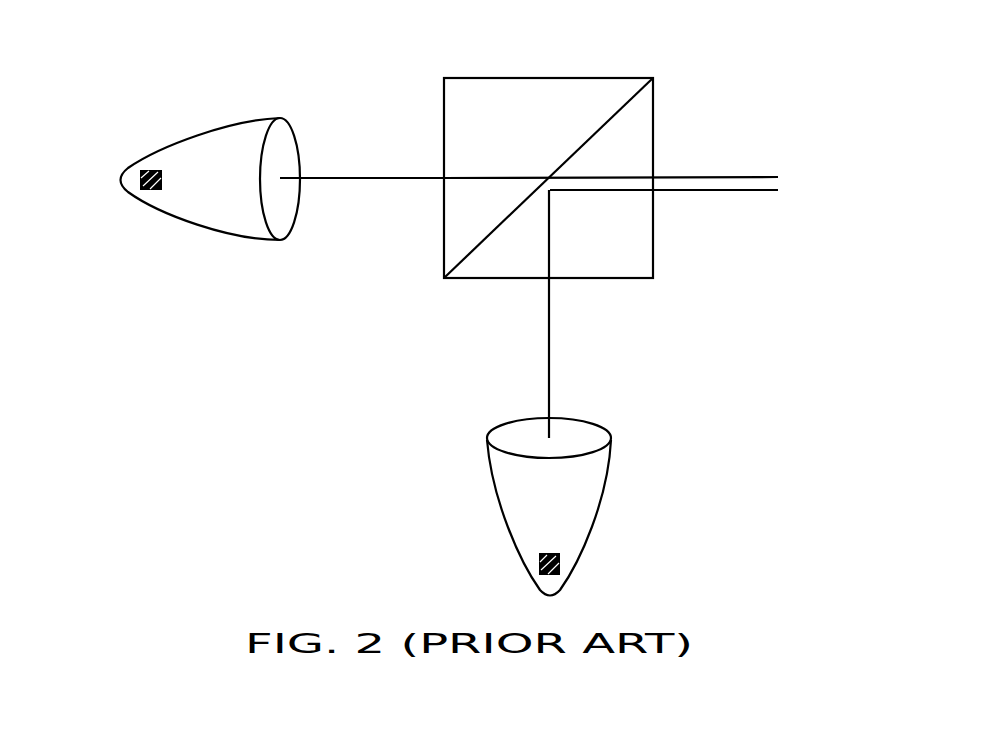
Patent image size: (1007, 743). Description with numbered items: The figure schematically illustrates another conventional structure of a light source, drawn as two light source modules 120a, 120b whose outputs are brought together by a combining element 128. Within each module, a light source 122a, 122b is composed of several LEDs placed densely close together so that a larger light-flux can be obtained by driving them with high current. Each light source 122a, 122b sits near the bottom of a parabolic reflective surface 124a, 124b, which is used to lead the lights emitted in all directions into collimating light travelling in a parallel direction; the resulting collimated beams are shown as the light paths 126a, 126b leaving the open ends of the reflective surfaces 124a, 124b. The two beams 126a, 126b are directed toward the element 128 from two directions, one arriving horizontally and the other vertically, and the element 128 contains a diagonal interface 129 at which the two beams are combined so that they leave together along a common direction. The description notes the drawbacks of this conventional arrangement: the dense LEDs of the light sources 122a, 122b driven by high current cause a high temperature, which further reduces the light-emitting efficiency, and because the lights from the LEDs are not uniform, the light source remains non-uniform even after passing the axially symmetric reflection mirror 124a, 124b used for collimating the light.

The first light source module 120a is at (523, 507).
The second light source module 120b is at (209, 166).
The light source 122a is at (560, 565).
The light source 122b is at (151, 190).
The parabolic reflective surface 124a is at (607, 488).
The parabolic reflective surface 124b is at (218, 230).
The first light beam 126a is at (549, 373).
The second light beam 126b is at (362, 178).
The beam splitter 128 is at (621, 144).
The reflective interface 129 is at (607, 118).